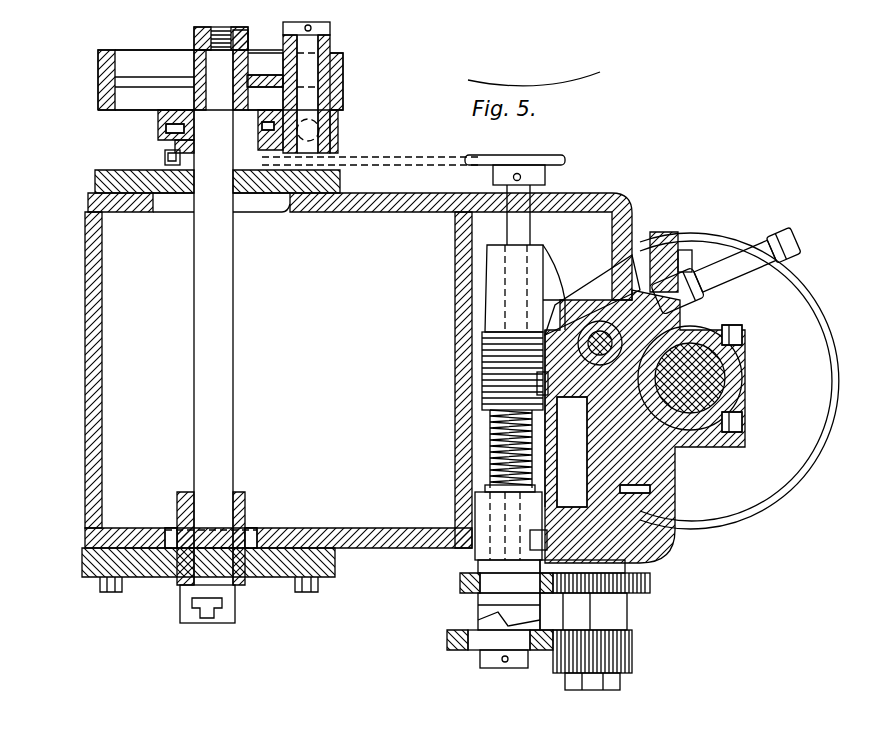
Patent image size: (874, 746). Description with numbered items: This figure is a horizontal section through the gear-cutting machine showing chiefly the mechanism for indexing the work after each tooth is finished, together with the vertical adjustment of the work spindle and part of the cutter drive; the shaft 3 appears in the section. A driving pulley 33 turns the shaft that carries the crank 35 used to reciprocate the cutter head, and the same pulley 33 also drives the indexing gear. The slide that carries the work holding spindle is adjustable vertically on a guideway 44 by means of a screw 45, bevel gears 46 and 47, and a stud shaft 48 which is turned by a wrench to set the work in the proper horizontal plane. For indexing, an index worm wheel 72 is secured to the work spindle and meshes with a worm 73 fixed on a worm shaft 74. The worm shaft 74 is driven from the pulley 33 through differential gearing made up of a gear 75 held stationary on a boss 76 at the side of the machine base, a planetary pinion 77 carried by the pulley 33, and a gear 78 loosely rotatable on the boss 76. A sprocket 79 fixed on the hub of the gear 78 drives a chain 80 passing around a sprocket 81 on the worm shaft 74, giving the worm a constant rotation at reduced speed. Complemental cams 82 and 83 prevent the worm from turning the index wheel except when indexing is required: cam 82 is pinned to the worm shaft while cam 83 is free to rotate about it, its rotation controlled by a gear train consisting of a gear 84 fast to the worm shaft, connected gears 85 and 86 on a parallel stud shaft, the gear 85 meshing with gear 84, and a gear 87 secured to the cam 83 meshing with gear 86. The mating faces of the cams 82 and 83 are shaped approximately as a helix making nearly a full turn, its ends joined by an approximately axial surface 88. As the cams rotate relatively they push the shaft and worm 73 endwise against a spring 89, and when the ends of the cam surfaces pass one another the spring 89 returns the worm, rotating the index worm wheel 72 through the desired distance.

The shaft 3 is at (228, 321).
The driving pulley 33 is at (343, 57).
The crank 35 is at (235, 615).
The guideway 44 is at (650, 476).
The screw 45 is at (588, 340).
The bevel gear 46 is at (566, 418).
The bevel gear 47 is at (600, 328).
The stud shaft 48 is at (748, 248).
The index worm wheel 72 is at (812, 447).
The worm 73 is at (487, 355).
The worm shaft 74 is at (540, 193).
The gear 75 is at (158, 125).
The boss 76 is at (165, 162).
The planetary pinion 77 is at (338, 127).
The gear 78 is at (175, 146).
The sprocket 79 is at (300, 204).
The chain 80 is at (370, 152).
The sprocket 81 is at (518, 160).
The cam 82 is at (478, 620).
The cam 83 is at (478, 605).
The gear 84 is at (450, 648).
The gear 85 is at (632, 641).
The gear 86 is at (650, 588).
The gear 87 is at (460, 581).
The surface 88 is at (540, 607).
The spring 89 is at (490, 430).